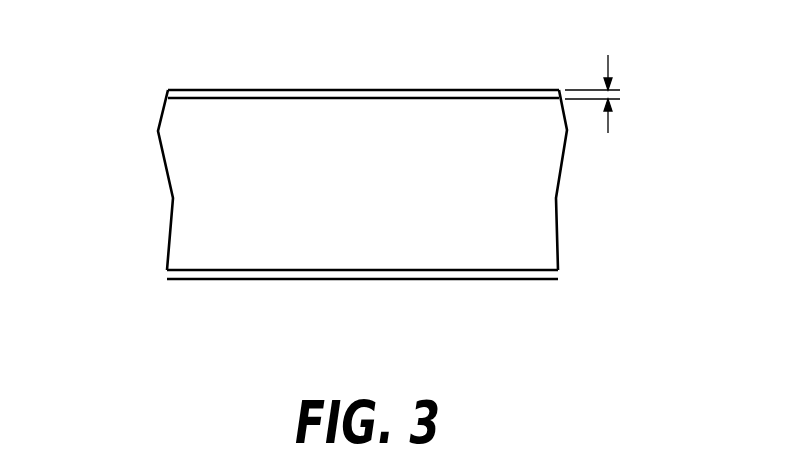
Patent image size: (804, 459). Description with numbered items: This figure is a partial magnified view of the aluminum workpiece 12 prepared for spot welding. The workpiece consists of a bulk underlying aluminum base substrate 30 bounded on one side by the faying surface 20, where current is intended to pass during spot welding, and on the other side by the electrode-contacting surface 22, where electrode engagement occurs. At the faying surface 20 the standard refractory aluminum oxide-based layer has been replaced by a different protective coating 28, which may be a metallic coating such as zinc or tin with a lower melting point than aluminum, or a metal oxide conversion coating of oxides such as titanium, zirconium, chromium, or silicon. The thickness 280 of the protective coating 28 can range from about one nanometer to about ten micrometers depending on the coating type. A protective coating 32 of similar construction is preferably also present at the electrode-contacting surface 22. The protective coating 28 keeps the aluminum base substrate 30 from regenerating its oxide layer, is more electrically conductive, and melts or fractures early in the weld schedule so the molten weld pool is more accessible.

The aluminum workpiece 12 is at (150, 157).
The faying surface 20 is at (290, 89).
The electrode-contacting surface 22 is at (293, 280).
The protective coating 28 is at (467, 95).
The aluminum base substrate 30 is at (525, 202).
The protective coating 32 is at (467, 275).
The thickness 280 is at (620, 95).